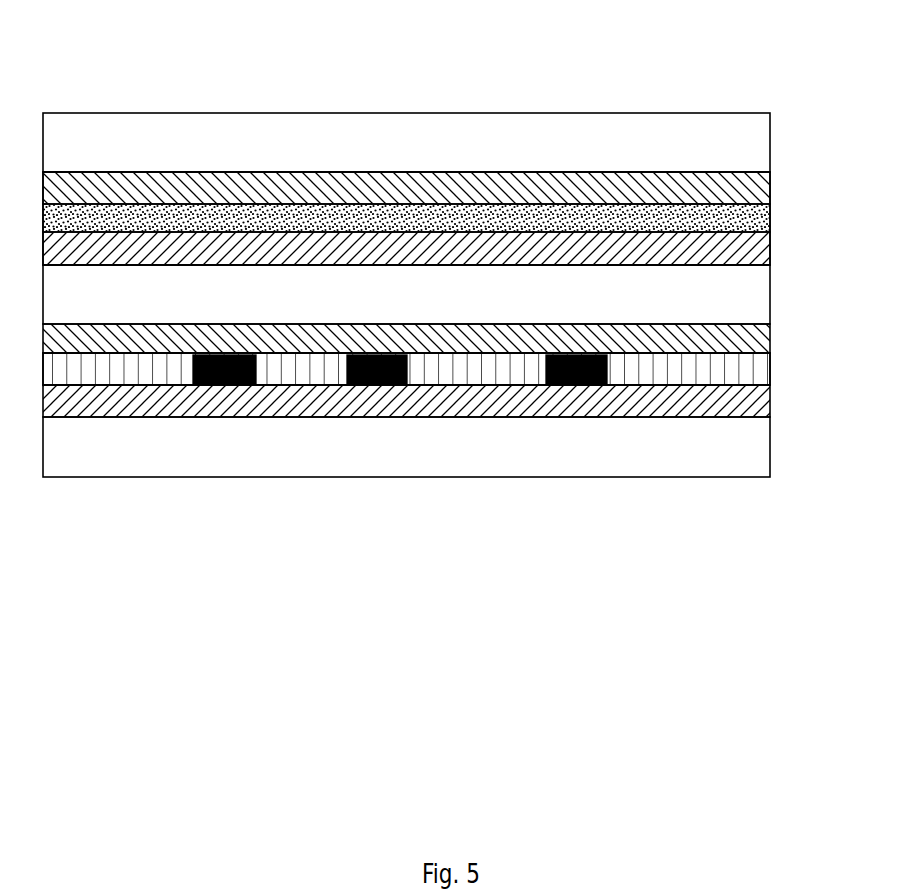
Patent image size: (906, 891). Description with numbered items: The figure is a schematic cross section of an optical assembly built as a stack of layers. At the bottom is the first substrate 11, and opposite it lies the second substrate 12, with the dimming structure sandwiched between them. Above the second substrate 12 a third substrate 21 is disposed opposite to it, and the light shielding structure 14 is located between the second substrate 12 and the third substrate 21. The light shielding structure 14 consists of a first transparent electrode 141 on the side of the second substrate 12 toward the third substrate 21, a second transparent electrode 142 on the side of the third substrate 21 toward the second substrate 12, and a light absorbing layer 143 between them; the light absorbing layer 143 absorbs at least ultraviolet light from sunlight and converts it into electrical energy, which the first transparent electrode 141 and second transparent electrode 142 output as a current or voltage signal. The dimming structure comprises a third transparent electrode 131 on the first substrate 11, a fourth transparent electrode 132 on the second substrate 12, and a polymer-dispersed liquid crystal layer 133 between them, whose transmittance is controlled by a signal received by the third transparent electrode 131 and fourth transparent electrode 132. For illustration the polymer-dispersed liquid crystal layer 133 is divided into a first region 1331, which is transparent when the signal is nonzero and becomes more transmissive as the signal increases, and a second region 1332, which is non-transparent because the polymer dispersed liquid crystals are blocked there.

The first substrate 11 is at (60, 477).
The second substrate 12 is at (648, 305).
The light shielding structure 14 is at (772, 172).
The third substrate 21 is at (103, 113).
The third transparent electrode 131 is at (147, 410).
The fourth transparent electrode 132 is at (527, 345).
The polymer-dispersed liquid crystal layer 133 is at (444, 463).
The first transparent electrode 141 is at (640, 250).
The second transparent electrode 142 is at (255, 182).
The light absorbing layer 143 is at (455, 215).
The first region 1331 is at (418, 368).
The second region 1332 is at (240, 385).